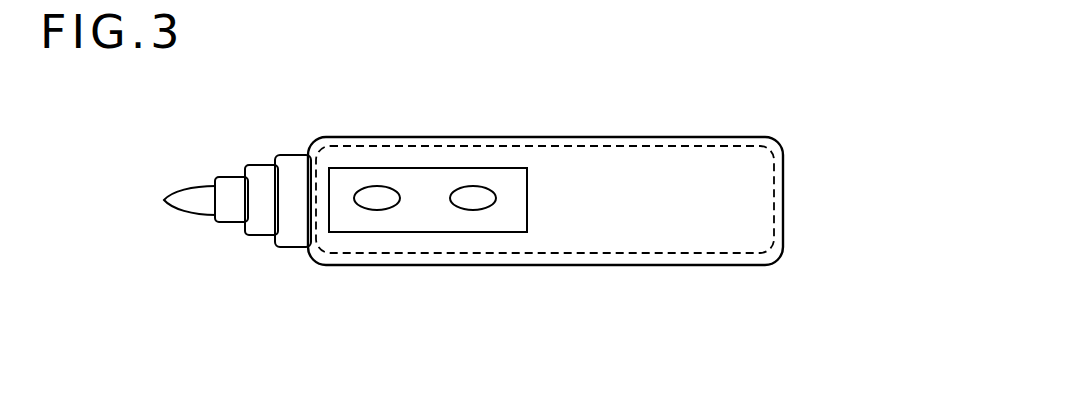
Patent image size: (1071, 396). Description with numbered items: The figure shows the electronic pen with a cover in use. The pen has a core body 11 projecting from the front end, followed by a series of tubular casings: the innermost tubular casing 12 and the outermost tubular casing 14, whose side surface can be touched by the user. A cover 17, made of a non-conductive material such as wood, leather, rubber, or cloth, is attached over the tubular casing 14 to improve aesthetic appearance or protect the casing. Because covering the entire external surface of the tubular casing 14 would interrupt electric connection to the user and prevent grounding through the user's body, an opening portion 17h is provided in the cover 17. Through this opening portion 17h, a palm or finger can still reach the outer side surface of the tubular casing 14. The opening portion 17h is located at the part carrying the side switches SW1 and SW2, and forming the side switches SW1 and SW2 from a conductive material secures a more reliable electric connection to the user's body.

The core body 11 is at (188, 186).
The tubular casing 12 is at (226, 223).
The tubular casing 14 is at (773, 173).
The cover 17 is at (597, 135).
The opening portion 17h is at (435, 218).
The side switch SW1 is at (377, 186).
The side switch SW2 is at (473, 186).